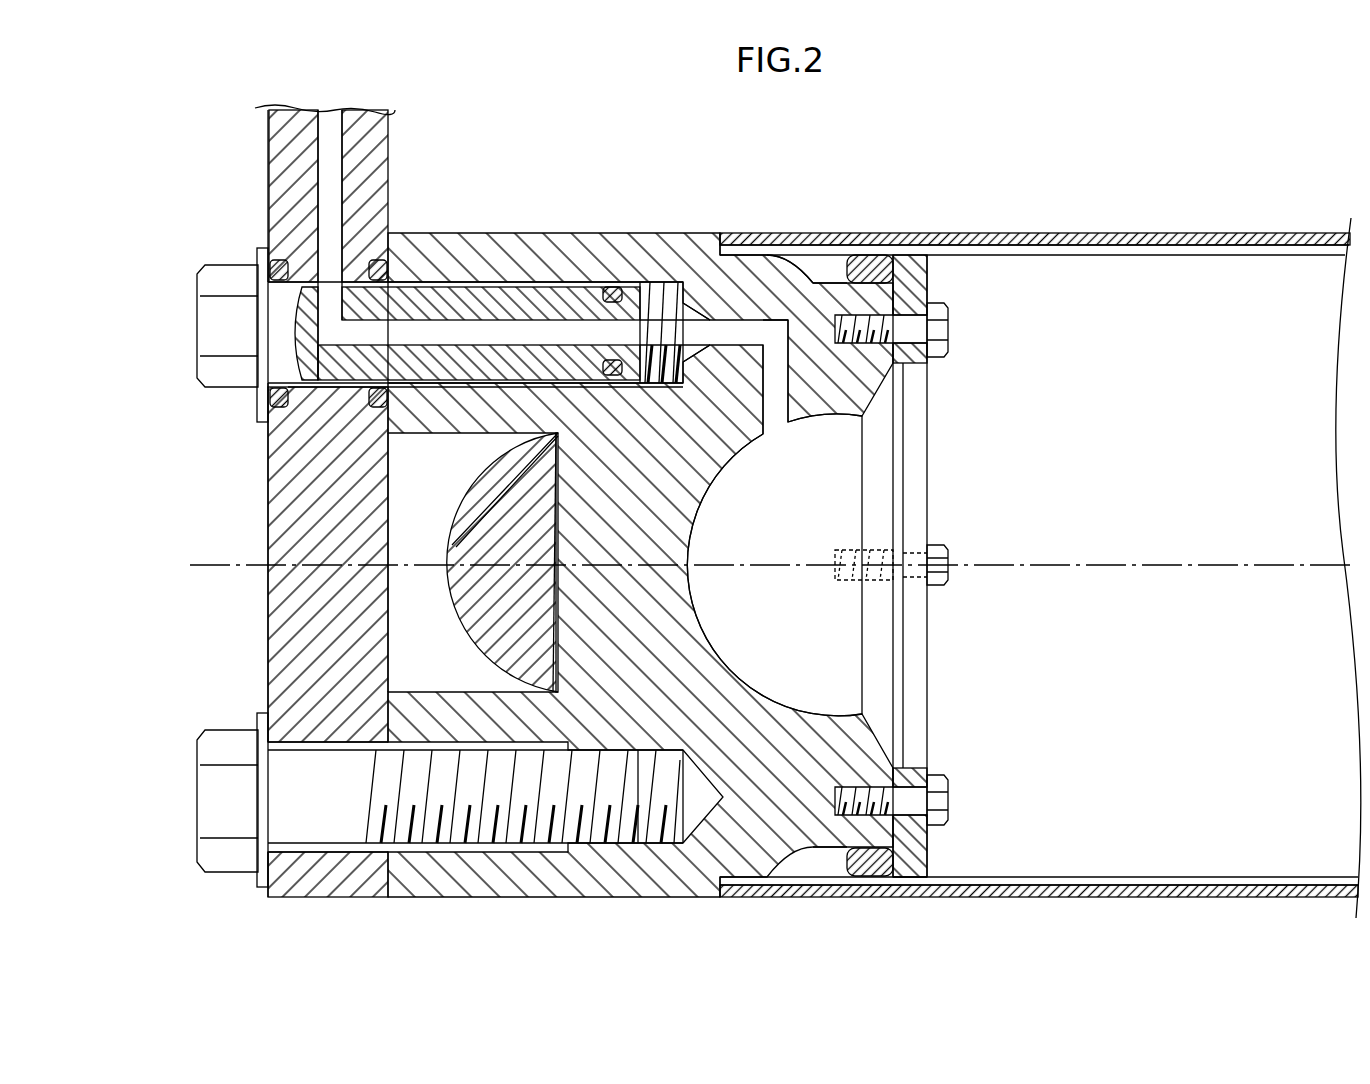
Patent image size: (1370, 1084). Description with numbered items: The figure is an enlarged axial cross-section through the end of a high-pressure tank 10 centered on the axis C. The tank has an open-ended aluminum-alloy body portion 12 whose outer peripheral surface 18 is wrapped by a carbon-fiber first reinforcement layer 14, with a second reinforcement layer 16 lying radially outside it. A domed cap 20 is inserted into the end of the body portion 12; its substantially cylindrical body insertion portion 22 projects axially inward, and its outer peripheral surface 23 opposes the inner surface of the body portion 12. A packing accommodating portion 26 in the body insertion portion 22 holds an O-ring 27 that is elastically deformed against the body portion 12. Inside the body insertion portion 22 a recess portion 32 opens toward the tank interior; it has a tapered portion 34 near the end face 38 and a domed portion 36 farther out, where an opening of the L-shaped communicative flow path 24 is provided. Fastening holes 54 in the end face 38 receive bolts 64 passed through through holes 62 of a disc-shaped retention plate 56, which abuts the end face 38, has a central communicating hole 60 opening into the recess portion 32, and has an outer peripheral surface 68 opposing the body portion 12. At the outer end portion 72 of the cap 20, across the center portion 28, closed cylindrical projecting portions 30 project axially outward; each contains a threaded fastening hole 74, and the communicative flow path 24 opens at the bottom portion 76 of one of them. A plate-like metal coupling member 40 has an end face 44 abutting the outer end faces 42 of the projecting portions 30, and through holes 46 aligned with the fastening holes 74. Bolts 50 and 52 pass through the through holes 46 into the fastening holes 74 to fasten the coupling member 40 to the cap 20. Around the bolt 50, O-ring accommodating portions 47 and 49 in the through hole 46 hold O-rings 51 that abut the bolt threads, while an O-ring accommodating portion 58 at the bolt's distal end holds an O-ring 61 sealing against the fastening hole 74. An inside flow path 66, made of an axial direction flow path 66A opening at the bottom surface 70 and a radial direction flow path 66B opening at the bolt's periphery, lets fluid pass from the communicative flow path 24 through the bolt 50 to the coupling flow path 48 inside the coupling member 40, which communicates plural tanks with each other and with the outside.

The high-pressure tank 10 is at (1215, 190).
The body portion 12 is at (1085, 256).
The first reinforcement layer 14 is at (1010, 233).
The second reinforcement layer 16 is at (455, 585).
The outer peripheral surface 18 is at (1105, 255).
The cap 20 is at (1000, 410).
The body insertion portion 22 is at (783, 267).
The outer peripheral surface 23 is at (837, 283).
The communicative flow path 24 is at (777, 420).
The packing accommodating portion 26 is at (823, 263).
The O-ring 27 is at (862, 268).
The center portion 28 is at (470, 545).
The projecting portion 30 is at (400, 246).
The recess portion 32 is at (774, 565).
The tapered portion 34 is at (862, 440).
The domed portion 36 is at (915, 612).
The end face 38 is at (925, 282).
The coupling member 40 is at (275, 493).
The outer end face 42 is at (375, 223).
The end face 44 is at (390, 590).
The through hole 46 is at (285, 300).
The O-ring accommodating portion 47 is at (262, 255).
The coupling flow path 48 is at (318, 165).
The O-ring accommodating portion 49 is at (397, 277).
The bolt 50 is at (210, 342).
The O-ring 51 is at (275, 397).
The bolt 52 is at (205, 802).
The fastening hole 54 is at (885, 350).
The retention plate 56 is at (900, 650).
The O-ring accommodating portion 58 is at (612, 288).
The communicating hole 60 is at (912, 768).
The O-ring 61 is at (622, 287).
The through hole 62 is at (945, 340).
The bolt 64 is at (950, 315).
The inside flow path 66 is at (482, 320).
The axial direction flow path 66A is at (542, 327).
The radial direction flow path 66B is at (320, 290).
The outer peripheral surface 68 is at (915, 880).
The bottom surface 70 is at (700, 330).
The outer end portion 72 is at (525, 450).
The fastening hole 74 is at (653, 287).
The bottom portion 76 is at (677, 287).
The axis C is at (1160, 560).